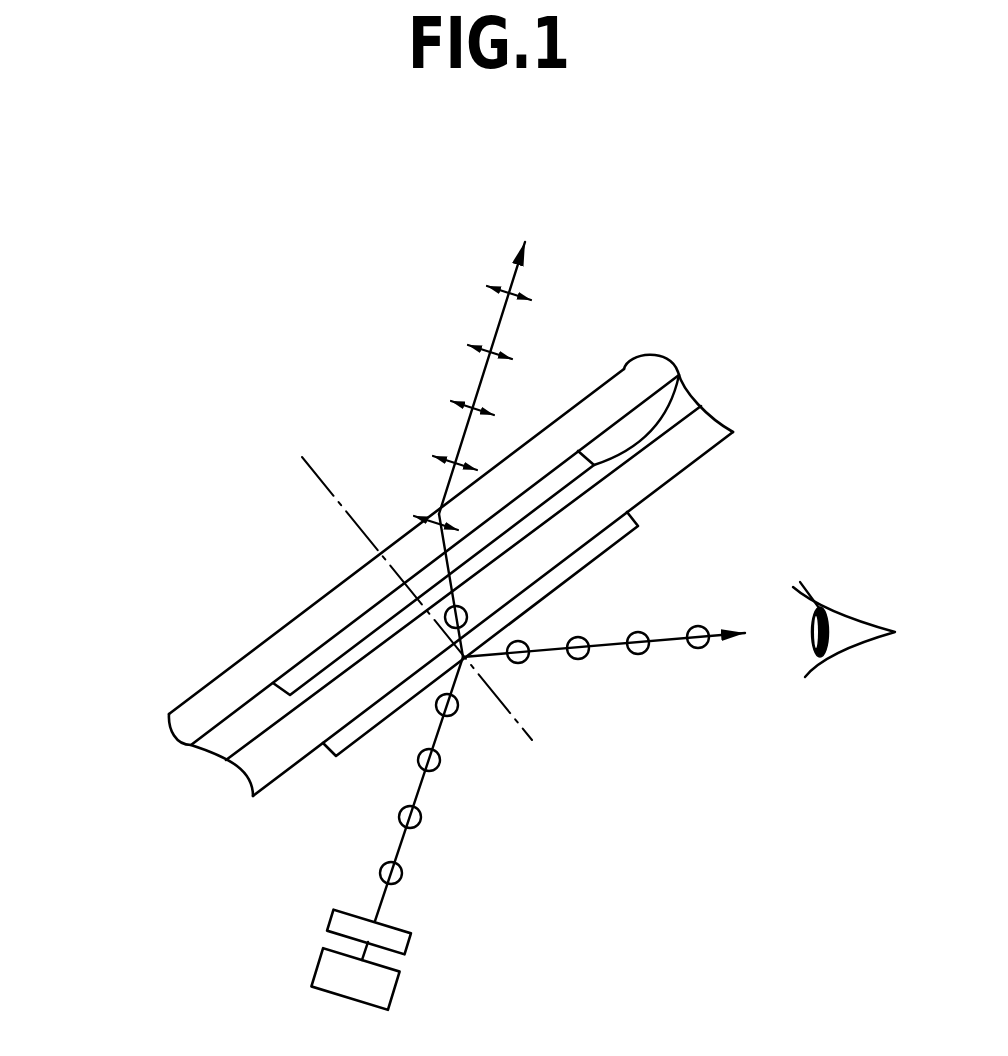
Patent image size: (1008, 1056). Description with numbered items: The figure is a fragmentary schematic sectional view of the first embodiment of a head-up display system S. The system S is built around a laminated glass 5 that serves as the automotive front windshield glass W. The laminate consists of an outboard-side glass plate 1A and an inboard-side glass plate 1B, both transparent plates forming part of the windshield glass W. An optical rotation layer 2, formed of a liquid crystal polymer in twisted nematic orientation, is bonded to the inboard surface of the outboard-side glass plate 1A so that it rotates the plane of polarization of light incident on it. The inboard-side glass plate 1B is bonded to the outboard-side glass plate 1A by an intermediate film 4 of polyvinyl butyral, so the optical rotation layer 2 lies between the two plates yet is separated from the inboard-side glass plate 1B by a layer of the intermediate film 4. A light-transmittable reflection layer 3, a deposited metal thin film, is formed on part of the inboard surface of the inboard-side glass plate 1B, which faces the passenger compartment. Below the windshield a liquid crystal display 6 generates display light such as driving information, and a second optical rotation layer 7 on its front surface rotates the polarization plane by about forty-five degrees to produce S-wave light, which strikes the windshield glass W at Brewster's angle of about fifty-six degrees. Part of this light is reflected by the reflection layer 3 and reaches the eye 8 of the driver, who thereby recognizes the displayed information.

The outboard-side glass plate 1A is at (626, 383).
The inboard-side glass plate 1B is at (683, 448).
The optical rotation layer 2 is at (683, 388).
The light-transmittable reflection layer 3 is at (607, 543).
The intermediate film 4 is at (215, 750).
The laminated glass 5 is at (260, 627).
The liquid crystal display 6 is at (382, 993).
The second optical rotation layer 7 is at (400, 940).
The eye 8 is at (847, 645).
The front windshield glass W is at (168, 662).
The display system S is at (645, 875).